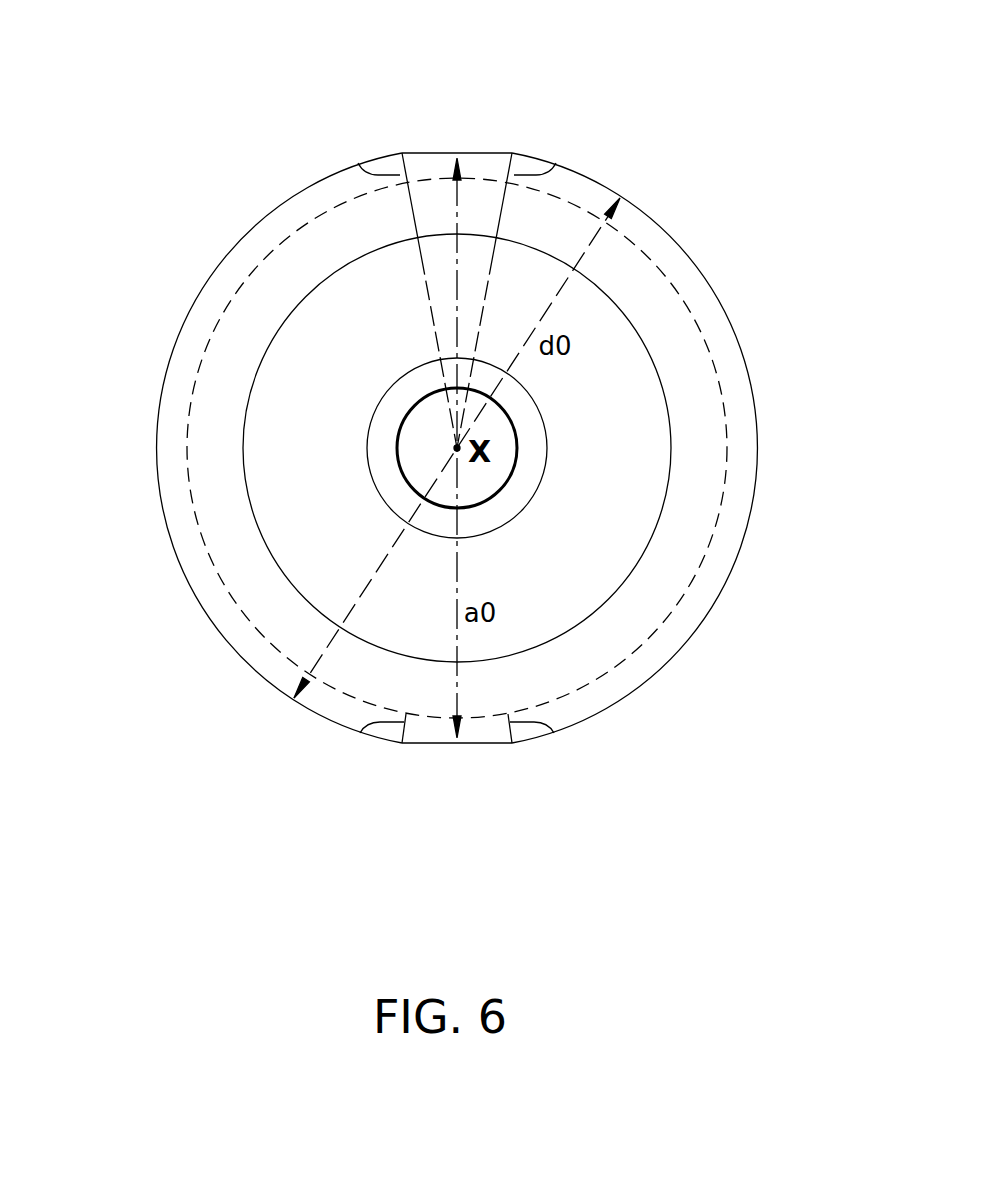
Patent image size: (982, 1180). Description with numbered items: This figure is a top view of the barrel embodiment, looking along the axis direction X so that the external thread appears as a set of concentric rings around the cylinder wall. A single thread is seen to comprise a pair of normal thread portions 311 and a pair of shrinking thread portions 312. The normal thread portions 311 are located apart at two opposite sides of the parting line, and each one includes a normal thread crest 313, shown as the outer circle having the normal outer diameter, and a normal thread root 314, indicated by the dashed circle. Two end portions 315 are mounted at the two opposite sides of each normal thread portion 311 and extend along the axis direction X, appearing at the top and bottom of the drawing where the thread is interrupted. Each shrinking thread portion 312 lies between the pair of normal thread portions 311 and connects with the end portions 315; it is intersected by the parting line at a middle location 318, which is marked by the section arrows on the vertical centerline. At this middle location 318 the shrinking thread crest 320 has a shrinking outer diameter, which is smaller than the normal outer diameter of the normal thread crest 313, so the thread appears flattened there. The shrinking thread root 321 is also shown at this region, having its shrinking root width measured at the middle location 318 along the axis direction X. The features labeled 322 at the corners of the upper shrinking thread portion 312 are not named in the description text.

The normal thread portion 311 is at (184, 328).
The shrinking thread portion 312 is at (468, 153).
The normal thread crest 313 is at (637, 203).
The normal thread root 314 is at (653, 258).
The end portion 315 is at (356, 163).
The middle location 318 is at (457, 132).
The shrinking thread crest 320 is at (487, 745).
The shrinking thread root 321 is at (477, 716).
The side wall of slot 322 is at (416, 152).